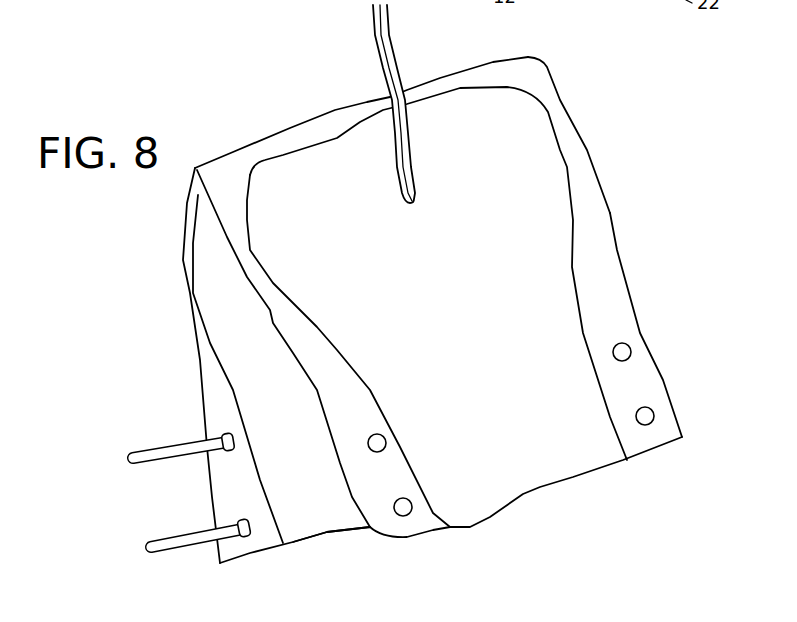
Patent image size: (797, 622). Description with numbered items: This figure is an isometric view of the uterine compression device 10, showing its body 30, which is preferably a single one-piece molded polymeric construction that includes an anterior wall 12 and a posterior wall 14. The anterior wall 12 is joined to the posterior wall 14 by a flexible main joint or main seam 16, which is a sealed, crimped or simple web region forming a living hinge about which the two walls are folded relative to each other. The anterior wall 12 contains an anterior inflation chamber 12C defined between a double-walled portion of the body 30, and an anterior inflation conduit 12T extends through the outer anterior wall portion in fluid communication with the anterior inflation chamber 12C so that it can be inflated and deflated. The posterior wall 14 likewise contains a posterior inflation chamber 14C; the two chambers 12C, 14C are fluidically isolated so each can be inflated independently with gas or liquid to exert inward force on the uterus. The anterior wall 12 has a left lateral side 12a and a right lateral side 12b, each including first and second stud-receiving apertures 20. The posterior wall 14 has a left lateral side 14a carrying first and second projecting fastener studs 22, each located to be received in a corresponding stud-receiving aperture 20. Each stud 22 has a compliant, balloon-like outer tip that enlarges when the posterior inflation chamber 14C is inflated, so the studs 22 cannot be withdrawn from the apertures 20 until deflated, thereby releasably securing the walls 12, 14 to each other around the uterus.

The device 10 is at (166, 292).
The anterior wall 12 is at (545, 467).
The anterior inflation conduit 12T is at (380, 35).
The anterior inflation chamber 12C is at (530, 192).
The right lateral side of the anterior wall 12b is at (603, 266).
The left lateral side of the anterior wall 12a is at (375, 490).
The posterior wall 14 is at (318, 490).
The posterior inflation chamber 14C is at (277, 387).
The left lateral side of the posterior wall 14a is at (217, 498).
The main joint or main seam 16 is at (283, 132).
The stud-receiving aperture 20 is at (631, 348).
The fastener stud 22 is at (172, 447).
The body 30 is at (545, 82).